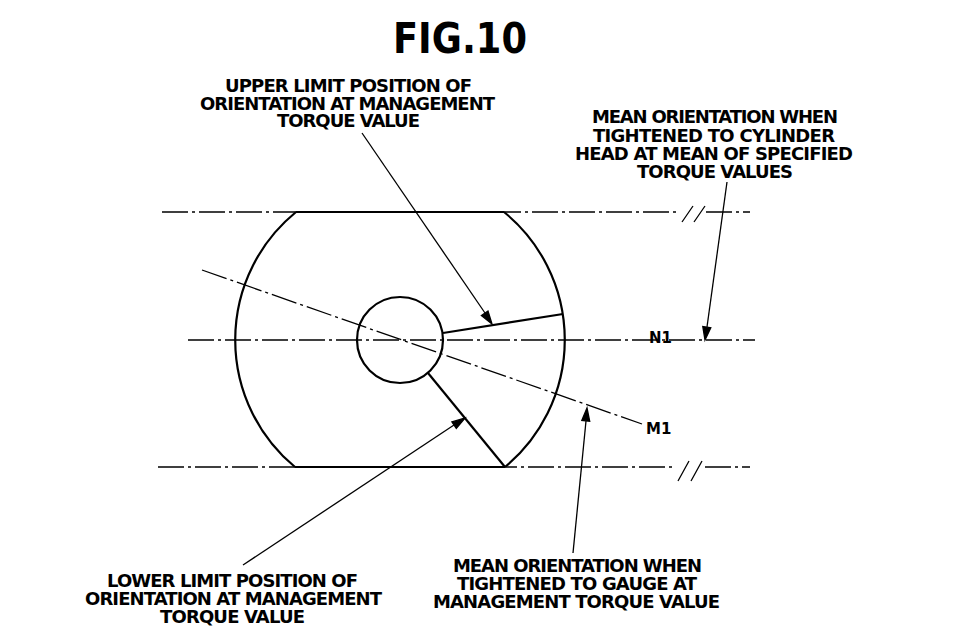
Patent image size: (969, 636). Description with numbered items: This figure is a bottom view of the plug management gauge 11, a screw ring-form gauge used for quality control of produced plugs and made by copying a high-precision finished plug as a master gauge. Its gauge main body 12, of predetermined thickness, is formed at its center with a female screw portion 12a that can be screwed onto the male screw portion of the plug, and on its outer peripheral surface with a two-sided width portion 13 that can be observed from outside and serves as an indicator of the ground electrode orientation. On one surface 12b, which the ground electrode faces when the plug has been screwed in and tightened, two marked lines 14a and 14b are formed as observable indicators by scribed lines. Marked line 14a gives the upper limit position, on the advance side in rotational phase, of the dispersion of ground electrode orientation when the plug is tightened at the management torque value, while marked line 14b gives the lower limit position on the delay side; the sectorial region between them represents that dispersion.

The plug management gauge 11 is at (221, 360).
The gauge main body 12 is at (252, 262).
The female screw portion 12a is at (393, 383).
The one surface 12b is at (262, 400).
The two-sided width portion 13 is at (333, 212).
The marked line 14a is at (527, 318).
The marked line 14b is at (478, 437).